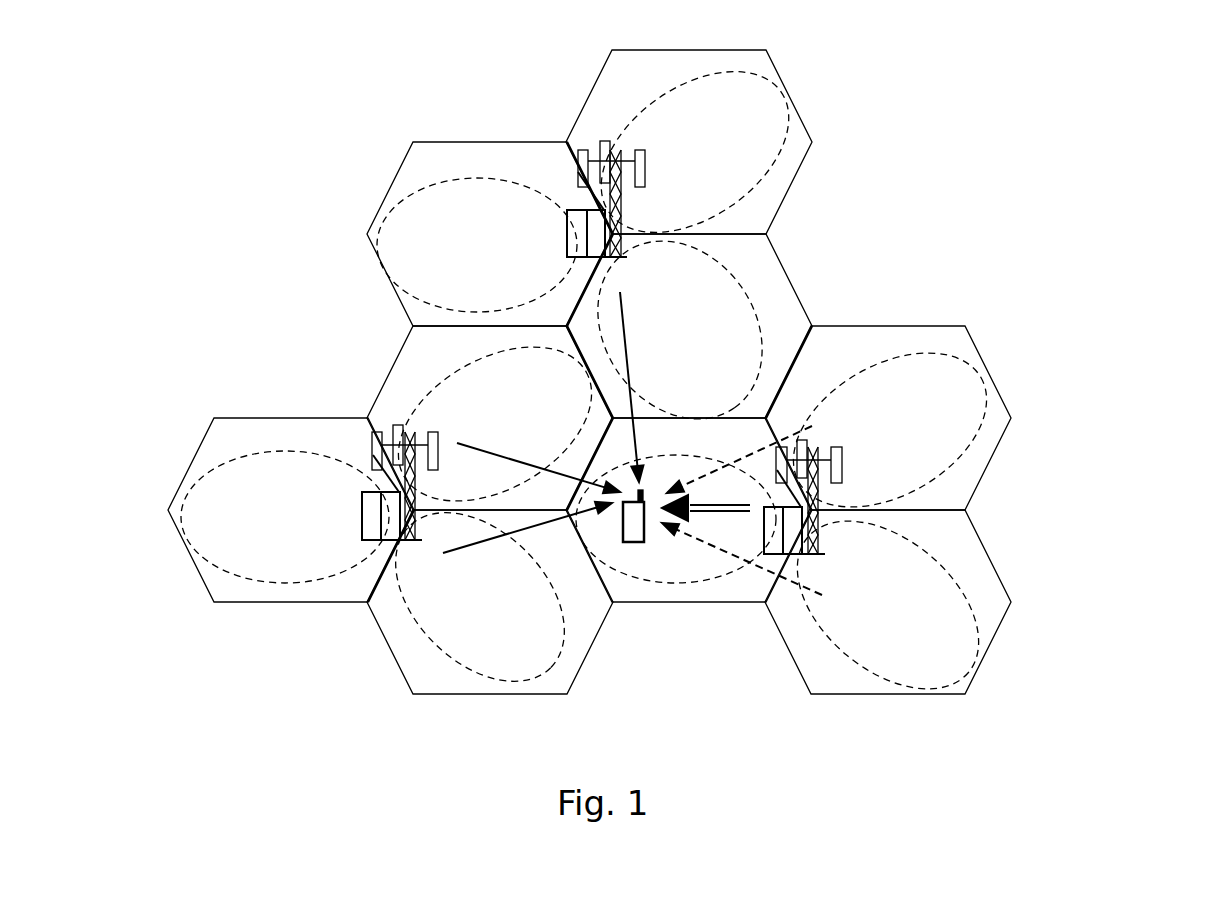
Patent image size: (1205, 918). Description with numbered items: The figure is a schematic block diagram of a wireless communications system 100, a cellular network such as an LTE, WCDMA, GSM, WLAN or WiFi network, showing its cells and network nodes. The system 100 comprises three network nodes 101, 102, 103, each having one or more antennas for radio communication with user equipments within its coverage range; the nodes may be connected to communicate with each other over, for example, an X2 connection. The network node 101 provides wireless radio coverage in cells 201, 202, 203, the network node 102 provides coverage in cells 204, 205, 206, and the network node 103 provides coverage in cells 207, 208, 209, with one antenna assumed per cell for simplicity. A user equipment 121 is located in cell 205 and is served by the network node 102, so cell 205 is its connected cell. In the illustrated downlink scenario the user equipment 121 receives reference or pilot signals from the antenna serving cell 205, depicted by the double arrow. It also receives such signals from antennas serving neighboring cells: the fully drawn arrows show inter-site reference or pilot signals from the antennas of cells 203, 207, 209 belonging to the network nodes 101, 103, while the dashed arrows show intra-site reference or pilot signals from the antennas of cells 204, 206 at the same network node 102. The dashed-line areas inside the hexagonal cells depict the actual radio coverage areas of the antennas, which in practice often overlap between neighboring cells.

The wireless communications system 100 is at (667, 404).
The network node 101 is at (567, 238).
The network node 102 is at (803, 541).
The network node 103 is at (362, 516).
The user equipment 121 is at (630, 543).
The cell 201 is at (664, 86).
The cell 202 is at (464, 177).
The cell 203 is at (764, 268).
The cell 204 is at (861, 365).
The cell 205 is at (711, 452).
The cell 206 is at (861, 695).
The cell 207 is at (462, 358).
The cell 208 is at (262, 446).
The cell 209 is at (462, 691).